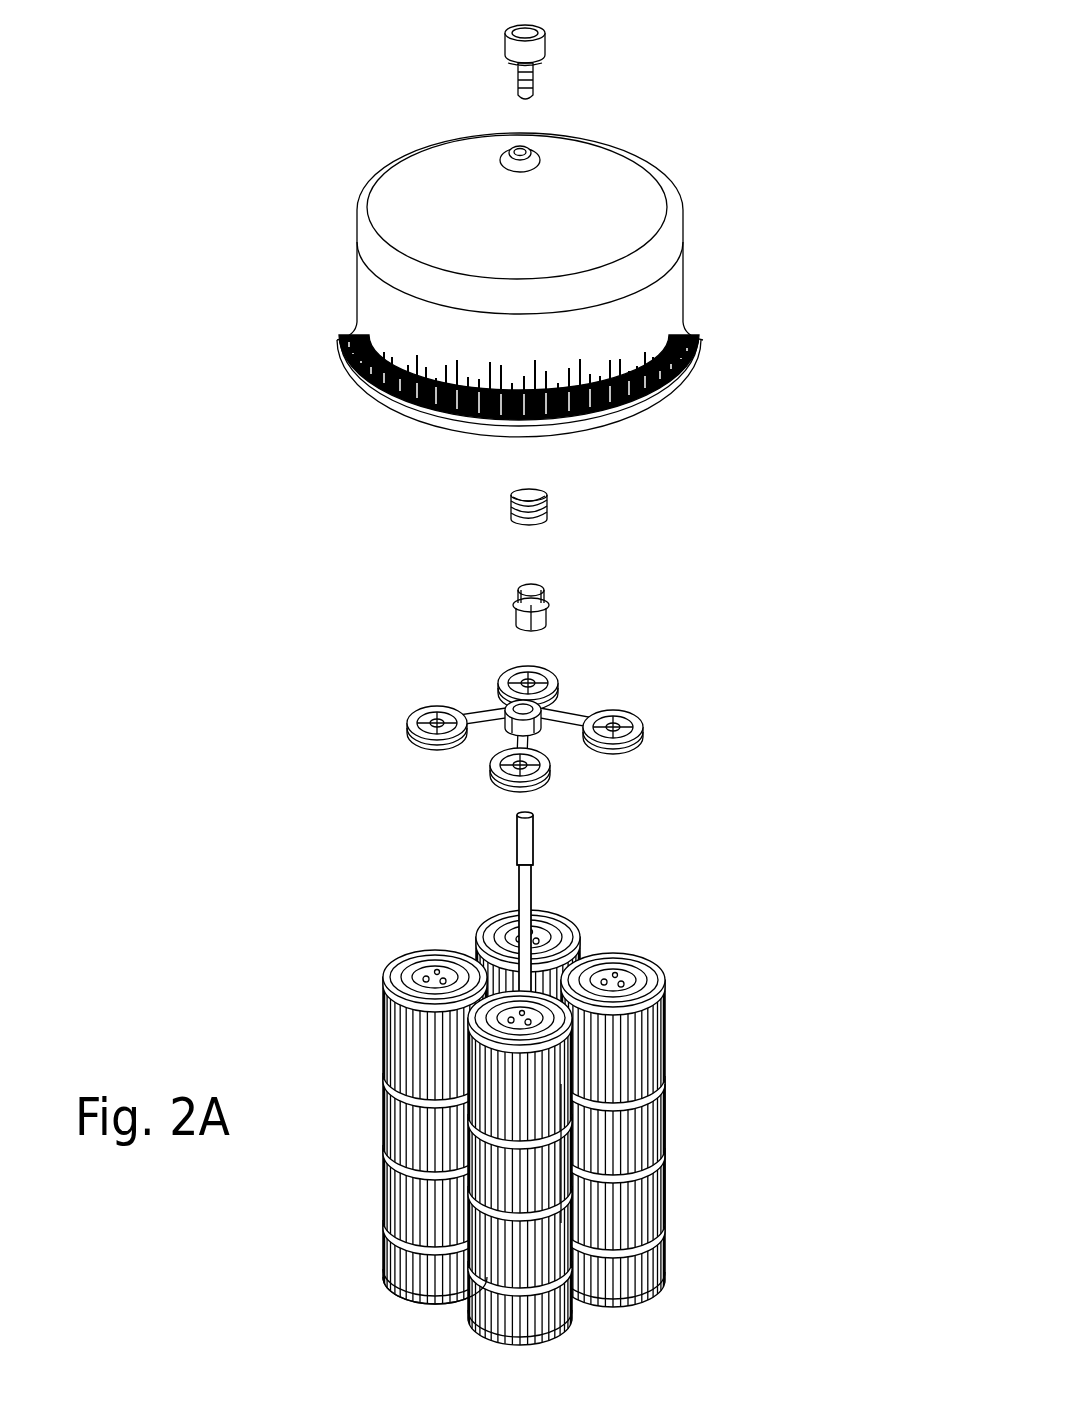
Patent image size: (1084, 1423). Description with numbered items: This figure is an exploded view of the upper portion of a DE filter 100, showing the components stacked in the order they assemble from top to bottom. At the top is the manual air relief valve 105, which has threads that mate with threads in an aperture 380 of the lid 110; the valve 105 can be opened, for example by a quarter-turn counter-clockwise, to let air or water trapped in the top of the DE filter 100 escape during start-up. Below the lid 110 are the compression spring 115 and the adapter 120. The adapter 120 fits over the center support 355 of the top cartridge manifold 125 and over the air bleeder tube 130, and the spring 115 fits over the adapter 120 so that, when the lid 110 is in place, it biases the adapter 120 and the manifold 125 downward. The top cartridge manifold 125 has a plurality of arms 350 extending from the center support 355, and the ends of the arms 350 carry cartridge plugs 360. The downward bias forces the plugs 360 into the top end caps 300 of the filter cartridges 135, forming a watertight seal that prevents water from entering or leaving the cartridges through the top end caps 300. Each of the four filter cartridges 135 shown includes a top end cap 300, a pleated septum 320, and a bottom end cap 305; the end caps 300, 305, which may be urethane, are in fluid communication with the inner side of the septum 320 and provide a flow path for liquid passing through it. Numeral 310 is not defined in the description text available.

The DE filter 100 is at (168, 278).
The air relief valve 105 is at (550, 45).
The lid 110 is at (692, 277).
The aperture 380 is at (530, 150).
The compression spring 115 is at (554, 503).
The adapter 120 is at (557, 608).
The top cartridge manifold 125 is at (642, 711).
The arms 350 is at (507, 705).
The center support 355 is at (497, 725).
The cartridge plugs 360 is at (613, 750).
The air bleeder tube 130 is at (542, 864).
The filter cartridges 135 is at (670, 1003).
The top end cap 300 is at (383, 980).
The cartridge end cap 310 is at (640, 958).
The septum 320 is at (632, 1120).
The bottom end cap 305 is at (388, 1300).